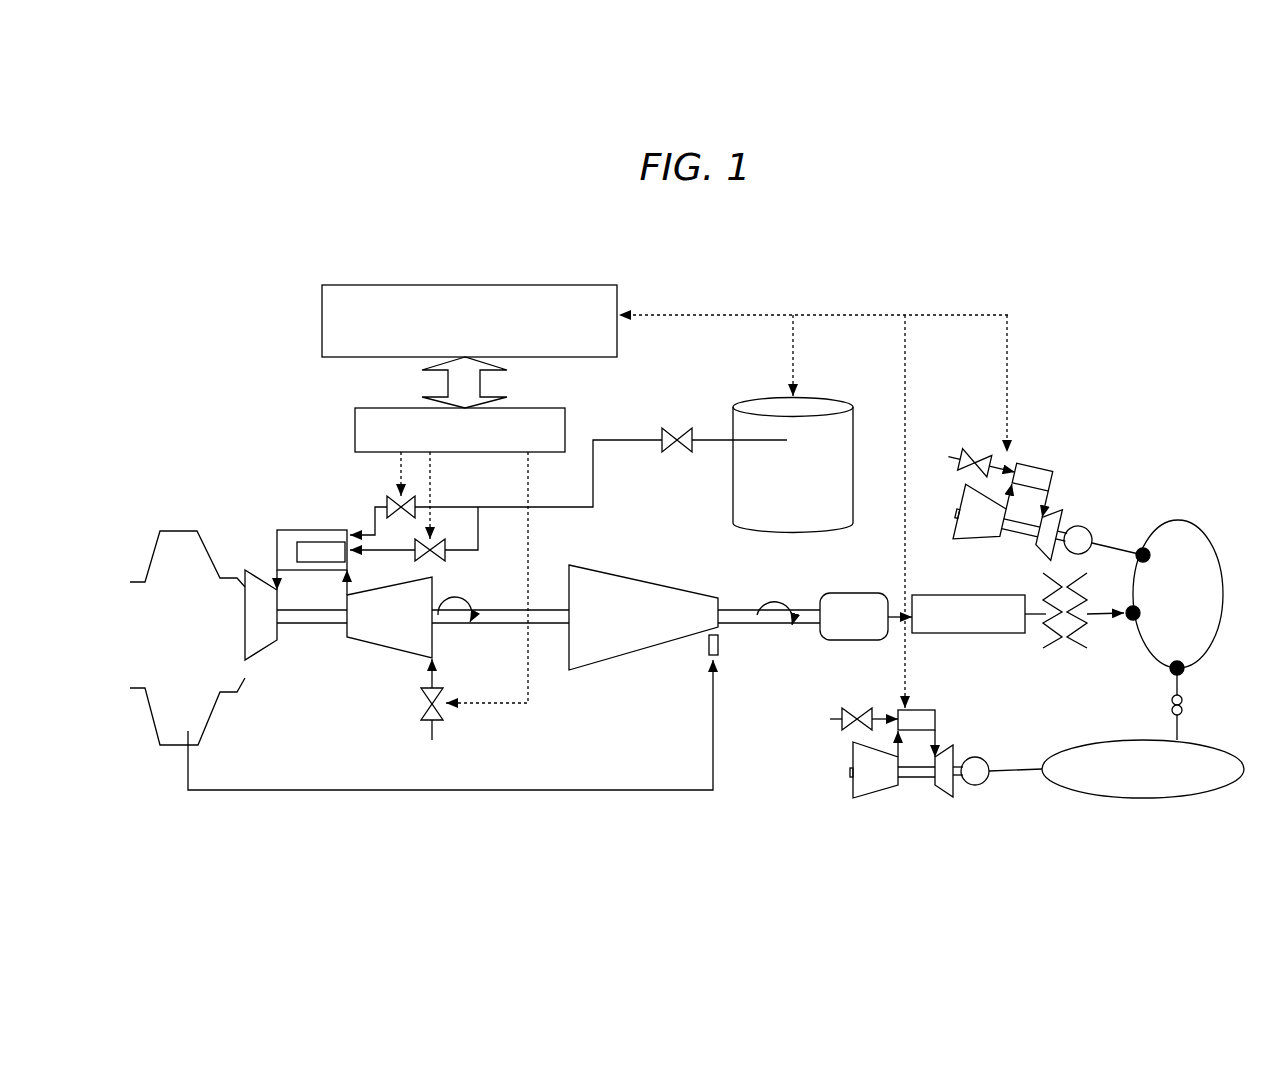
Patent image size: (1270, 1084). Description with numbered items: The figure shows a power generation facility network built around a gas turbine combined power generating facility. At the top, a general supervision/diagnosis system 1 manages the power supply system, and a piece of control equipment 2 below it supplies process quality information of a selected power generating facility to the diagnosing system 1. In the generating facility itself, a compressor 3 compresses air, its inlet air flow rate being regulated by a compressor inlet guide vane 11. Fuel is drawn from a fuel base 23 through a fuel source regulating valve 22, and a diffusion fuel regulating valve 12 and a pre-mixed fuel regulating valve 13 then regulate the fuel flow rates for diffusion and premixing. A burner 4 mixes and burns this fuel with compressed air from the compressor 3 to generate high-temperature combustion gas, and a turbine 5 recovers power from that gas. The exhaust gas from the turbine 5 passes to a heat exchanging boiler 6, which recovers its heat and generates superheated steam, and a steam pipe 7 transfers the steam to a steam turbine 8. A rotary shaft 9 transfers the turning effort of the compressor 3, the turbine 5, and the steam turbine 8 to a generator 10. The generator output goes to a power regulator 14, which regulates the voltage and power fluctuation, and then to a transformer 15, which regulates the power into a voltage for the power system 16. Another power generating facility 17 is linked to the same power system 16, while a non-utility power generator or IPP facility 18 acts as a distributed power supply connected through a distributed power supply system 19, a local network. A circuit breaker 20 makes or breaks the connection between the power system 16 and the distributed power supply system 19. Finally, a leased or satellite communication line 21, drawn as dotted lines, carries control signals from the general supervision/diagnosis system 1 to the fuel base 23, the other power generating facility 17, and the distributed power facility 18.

The general supervision/diagnosis system 1 is at (505, 284).
The control equipment 2 is at (530, 408).
The compressor 3 is at (390, 646).
The burner 4 is at (293, 530).
The turbine 5 is at (262, 650).
The heat exchanging boiler 6 is at (172, 525).
The steam pipe 7 is at (455, 790).
The steam turbine 8 is at (632, 655).
The rotary shaft 9 is at (737, 608).
The generator 10 is at (845, 593).
The compressor inlet guide vane 11 is at (445, 718).
The diffusion fuel regulating valve 12 is at (447, 556).
The pre-mixed fuel regulating valve 13 is at (385, 497).
The power regulator 14 is at (980, 633).
The transformer 15 is at (1055, 645).
The power system 16 is at (1175, 520).
The another power generating facility 17 is at (1060, 512).
The non-utility power generator or IPP facility 18 is at (885, 797).
The distributed power supply system 19 is at (1110, 740).
The circuit breaker 20 is at (1183, 706).
The leased or satellite communication line 21 is at (950, 315).
The fuel source regulating valve 22 is at (677, 428).
The fuel base 23 is at (835, 400).